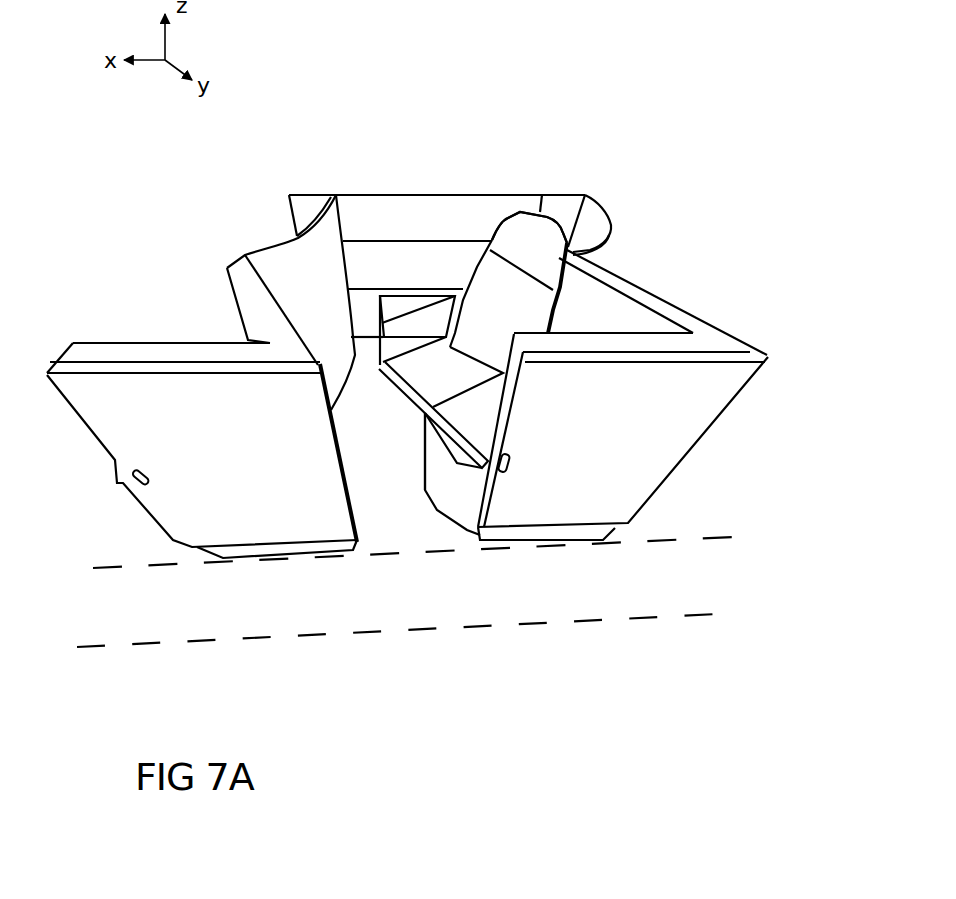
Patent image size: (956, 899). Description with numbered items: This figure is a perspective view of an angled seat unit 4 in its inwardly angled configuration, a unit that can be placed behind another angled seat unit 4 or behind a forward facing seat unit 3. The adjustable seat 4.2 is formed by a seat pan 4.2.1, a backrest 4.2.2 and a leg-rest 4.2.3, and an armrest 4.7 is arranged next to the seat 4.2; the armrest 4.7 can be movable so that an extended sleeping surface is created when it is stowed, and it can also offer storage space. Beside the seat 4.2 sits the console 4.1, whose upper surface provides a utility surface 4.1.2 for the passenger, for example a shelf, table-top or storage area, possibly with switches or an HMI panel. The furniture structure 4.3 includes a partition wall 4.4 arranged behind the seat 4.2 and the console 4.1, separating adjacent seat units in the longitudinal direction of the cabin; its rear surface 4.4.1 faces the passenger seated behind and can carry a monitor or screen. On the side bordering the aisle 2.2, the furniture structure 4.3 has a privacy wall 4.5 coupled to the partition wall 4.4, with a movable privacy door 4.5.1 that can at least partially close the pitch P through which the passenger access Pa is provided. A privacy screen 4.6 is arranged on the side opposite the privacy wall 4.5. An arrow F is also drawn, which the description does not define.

The aisle 2.2 is at (698, 567).
The forward facing seat unit 3 is at (150, 265).
The angled seat unit 4 is at (668, 197).
The console 4.1 is at (445, 485).
The utility surface 4.1.2 is at (410, 413).
The adjustable seat 4.2 is at (503, 207).
The seat pan 4.2.1 is at (429, 360).
The backrest 4.2.2 is at (595, 258).
The leg-rest 4.2.3 is at (470, 410).
The furniture structure 4.3 is at (609, 162).
The partition wall 4.4 is at (615, 312).
The rear surface 4.4.1 is at (703, 315).
The privacy wall 4.5 is at (677, 340).
The movable privacy door 4.5.1 is at (693, 413).
The privacy screen 4.6 is at (350, 210).
The armrest 4.7 is at (402, 302).
The passenger access Pa is at (384, 524).
The force direction F is at (64, 548).
The pitch P is at (460, 541).